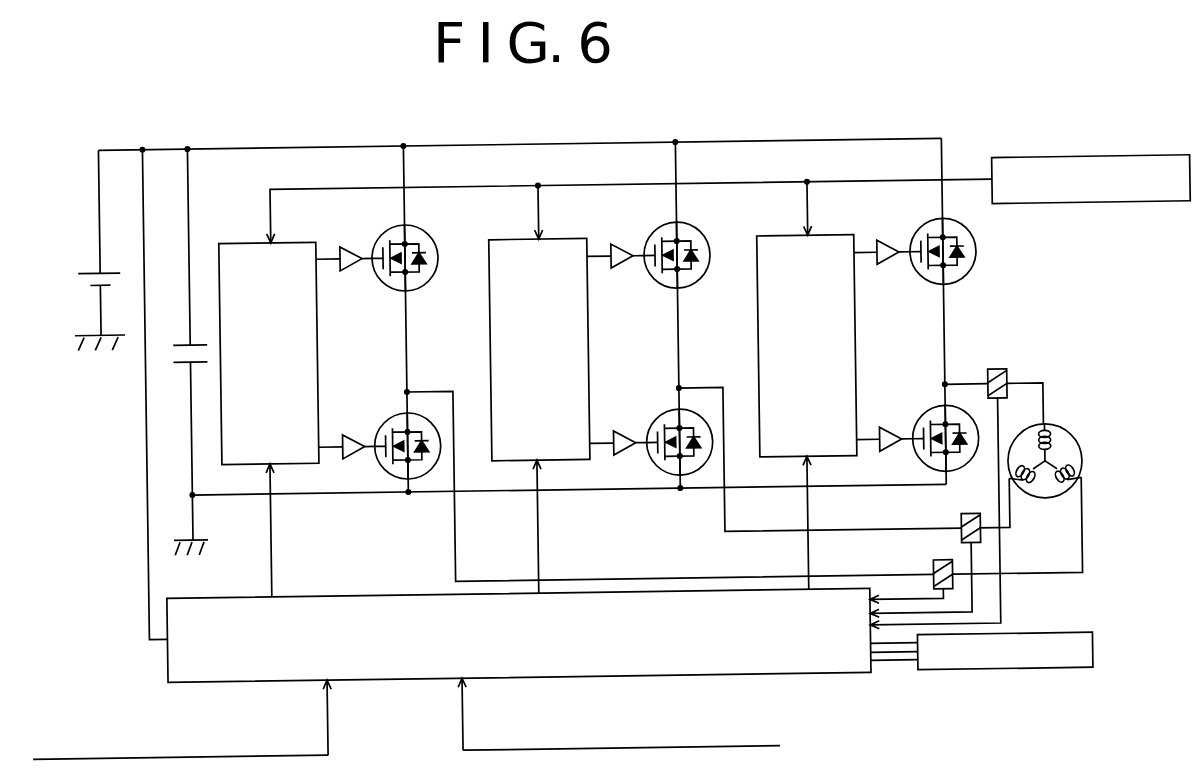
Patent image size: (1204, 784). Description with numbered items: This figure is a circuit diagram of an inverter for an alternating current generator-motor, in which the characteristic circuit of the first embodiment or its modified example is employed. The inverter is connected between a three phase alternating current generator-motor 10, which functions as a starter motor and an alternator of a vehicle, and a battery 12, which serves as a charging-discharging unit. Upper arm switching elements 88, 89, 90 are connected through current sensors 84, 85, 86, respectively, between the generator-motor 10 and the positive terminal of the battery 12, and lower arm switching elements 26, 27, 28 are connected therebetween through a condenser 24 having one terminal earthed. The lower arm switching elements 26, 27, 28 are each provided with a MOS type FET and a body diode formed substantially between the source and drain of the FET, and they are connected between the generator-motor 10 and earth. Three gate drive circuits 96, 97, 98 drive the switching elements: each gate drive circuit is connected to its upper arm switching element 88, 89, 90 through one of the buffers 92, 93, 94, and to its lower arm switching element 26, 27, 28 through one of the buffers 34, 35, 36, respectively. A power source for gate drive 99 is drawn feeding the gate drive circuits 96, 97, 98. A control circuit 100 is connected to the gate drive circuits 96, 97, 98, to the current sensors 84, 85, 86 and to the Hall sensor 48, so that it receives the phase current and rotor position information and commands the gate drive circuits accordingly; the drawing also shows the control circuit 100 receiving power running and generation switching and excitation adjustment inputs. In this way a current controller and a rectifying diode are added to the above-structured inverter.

The three phase alternating current generator-motor 10 is at (1061, 439).
The battery 12 is at (89, 266).
The condenser 24 is at (183, 340).
The lower arm switching element 26 is at (382, 422).
The lower arm switching element 27 is at (654, 423).
The lower arm switching element 28 is at (921, 421).
The buffer 34 is at (338, 458).
The buffer 35 is at (609, 458).
The buffer 36 is at (875, 458).
The Hall sensor 48 is at (1088, 659).
The current sensor 84 is at (949, 570).
The current sensor 85 is at (977, 528).
The current sensor 86 is at (1006, 380).
The upper arm switching element 88 is at (384, 231).
The upper arm switching element 89 is at (653, 231).
The upper arm switching element 90 is at (923, 229).
The buffer 92 is at (349, 270).
The buffer 93 is at (619, 273).
The buffer 94 is at (887, 274).
The gate drive circuit 96 is at (259, 240).
The gate drive circuit 97 is at (514, 240).
The gate drive circuit 98 is at (781, 237).
The power source for gate drive 99 is at (1112, 167).
The control circuit 100 is at (840, 681).